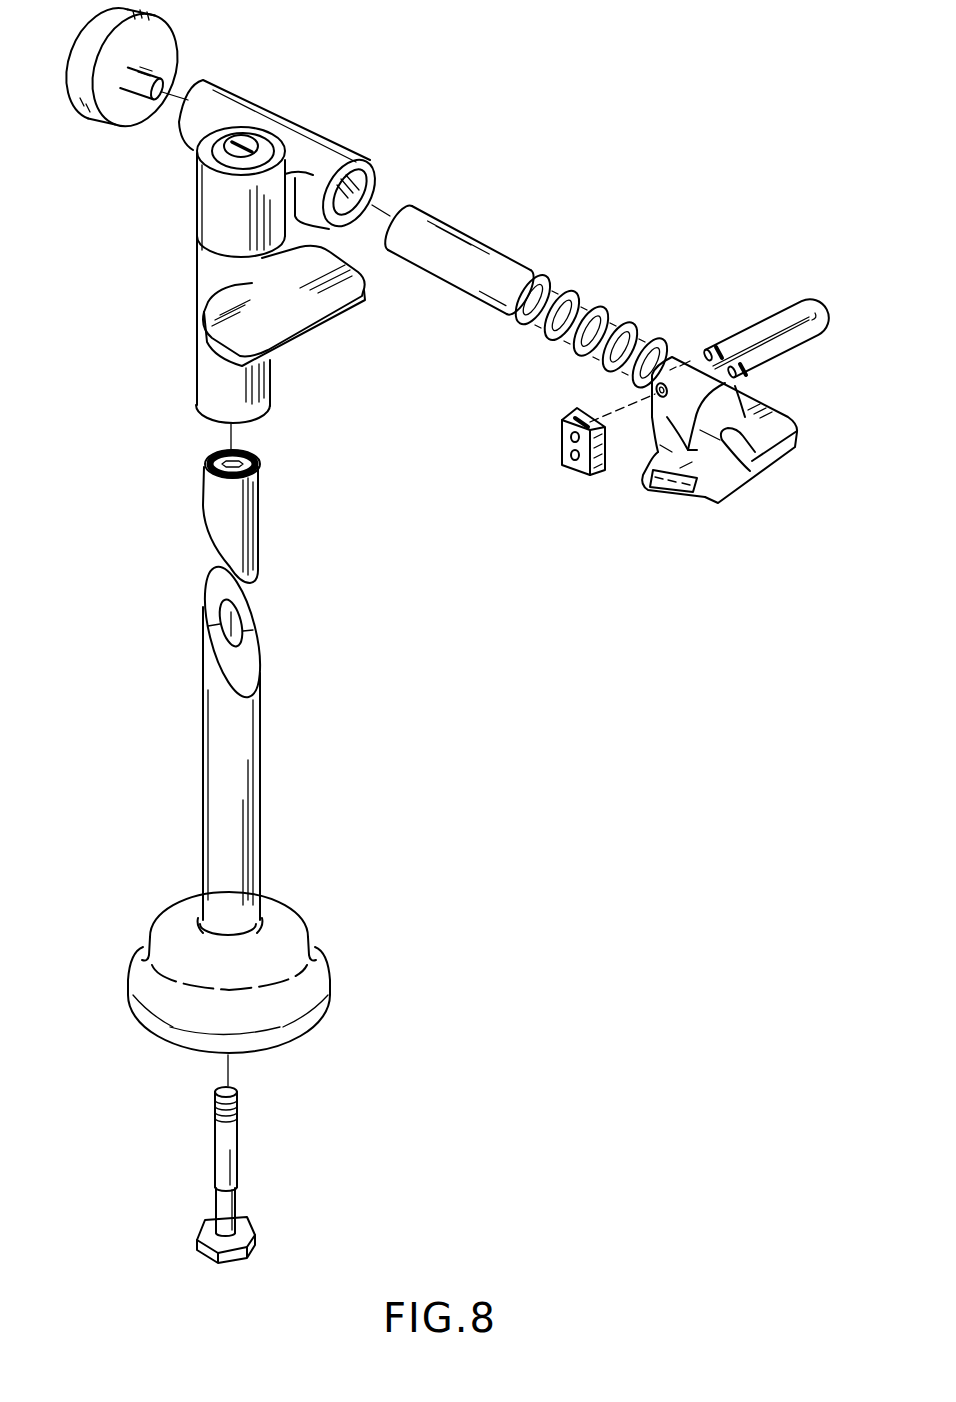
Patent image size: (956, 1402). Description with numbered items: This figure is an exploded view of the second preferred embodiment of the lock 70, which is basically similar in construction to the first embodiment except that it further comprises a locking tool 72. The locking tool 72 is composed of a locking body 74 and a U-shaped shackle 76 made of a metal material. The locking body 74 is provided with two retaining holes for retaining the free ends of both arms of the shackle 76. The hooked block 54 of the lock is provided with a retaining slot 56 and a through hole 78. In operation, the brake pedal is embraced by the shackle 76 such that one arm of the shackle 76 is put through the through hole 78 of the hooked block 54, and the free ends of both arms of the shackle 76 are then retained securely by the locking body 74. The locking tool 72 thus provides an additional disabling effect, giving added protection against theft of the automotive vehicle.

The valve assembly 70 is at (500, 115).
The locking tool 72 is at (725, 622).
The locking body 74 is at (592, 481).
The U-shaped shackle 76 is at (793, 343).
The through hole 78 is at (665, 355).
The hooked block 54 is at (720, 482).
The retaining slot 56 is at (748, 472).